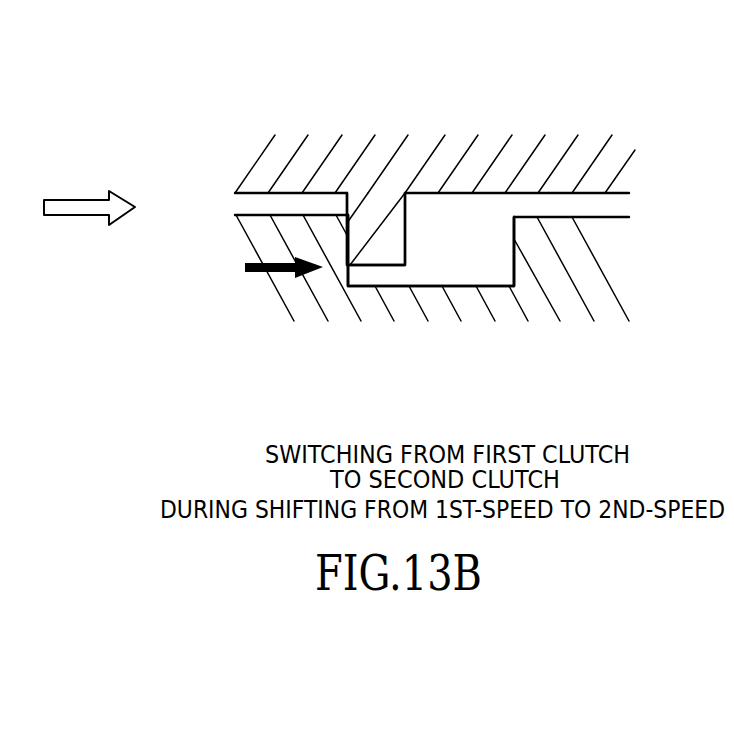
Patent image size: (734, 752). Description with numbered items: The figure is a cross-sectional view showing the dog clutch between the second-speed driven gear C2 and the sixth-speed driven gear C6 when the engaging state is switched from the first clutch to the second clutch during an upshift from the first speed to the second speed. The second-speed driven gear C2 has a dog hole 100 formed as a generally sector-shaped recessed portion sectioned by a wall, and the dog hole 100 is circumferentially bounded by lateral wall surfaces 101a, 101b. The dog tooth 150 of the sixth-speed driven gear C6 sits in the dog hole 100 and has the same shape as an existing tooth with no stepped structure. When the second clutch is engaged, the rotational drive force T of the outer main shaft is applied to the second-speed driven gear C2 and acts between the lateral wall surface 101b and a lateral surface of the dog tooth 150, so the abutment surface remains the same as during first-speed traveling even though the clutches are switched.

The dog hole 100 is at (471, 220).
The lateral wall surface 101a is at (514, 266).
The lateral wall surface 101b is at (348, 270).
The dog tooth 150 is at (381, 263).
The rotational drive force T is at (262, 272).
The sixth-speed driven gear C6 is at (435, 241).
The second-speed driven gear C2 is at (432, 244).